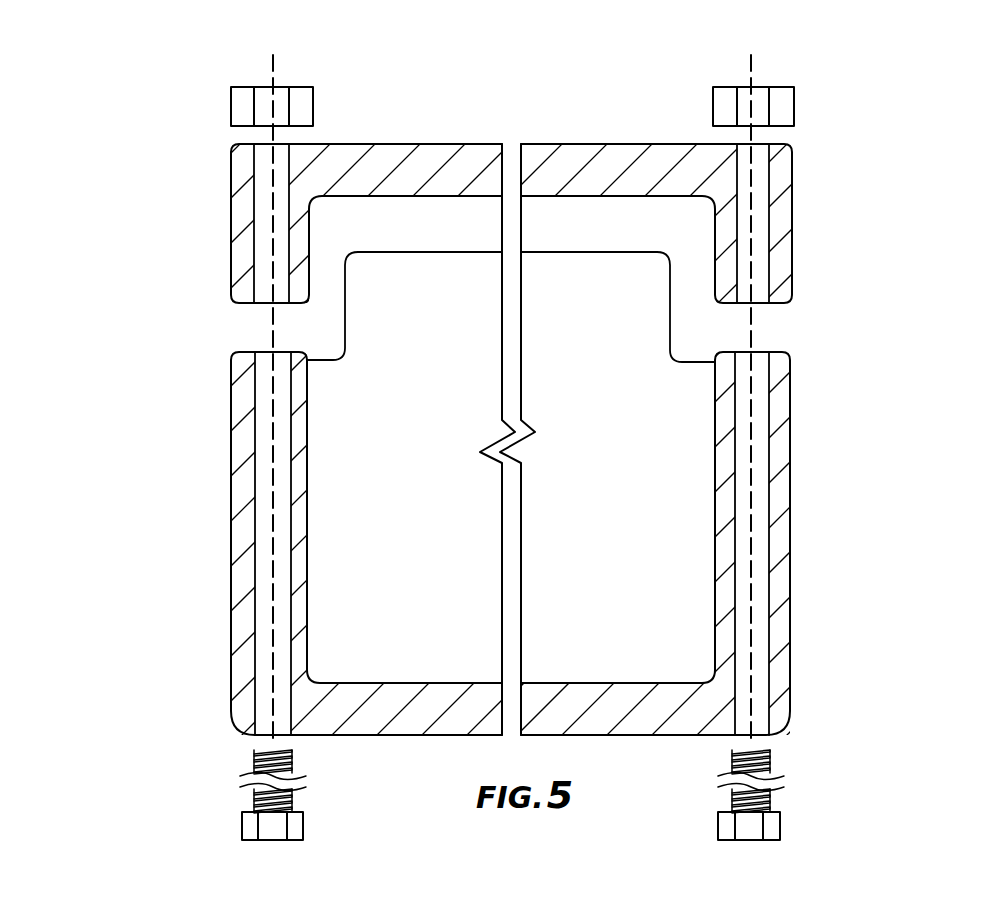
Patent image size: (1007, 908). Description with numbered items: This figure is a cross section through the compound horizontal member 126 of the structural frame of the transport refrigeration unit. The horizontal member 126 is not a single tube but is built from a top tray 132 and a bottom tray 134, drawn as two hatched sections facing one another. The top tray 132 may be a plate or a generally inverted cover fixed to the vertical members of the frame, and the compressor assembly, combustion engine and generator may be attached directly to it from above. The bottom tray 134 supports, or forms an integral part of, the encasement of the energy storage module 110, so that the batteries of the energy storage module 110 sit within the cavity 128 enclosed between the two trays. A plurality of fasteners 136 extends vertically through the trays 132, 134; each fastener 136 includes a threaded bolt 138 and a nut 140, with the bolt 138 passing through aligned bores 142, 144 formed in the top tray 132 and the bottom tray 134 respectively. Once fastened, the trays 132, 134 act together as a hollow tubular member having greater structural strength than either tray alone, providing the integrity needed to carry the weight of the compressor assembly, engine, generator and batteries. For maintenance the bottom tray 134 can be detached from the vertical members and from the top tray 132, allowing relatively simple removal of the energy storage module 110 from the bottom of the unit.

The energy storage module 110 is at (629, 409).
The horizontal member 126 is at (130, 132).
The cavity 128 is at (639, 246).
The top tray 132 is at (585, 144).
The bottom tray 134 is at (790, 544).
The fastener 136 is at (788, 68).
The threaded bolt 138 is at (307, 814).
The nut 140 is at (313, 107).
The bore 142 is at (255, 203).
The bore 144 is at (255, 446).